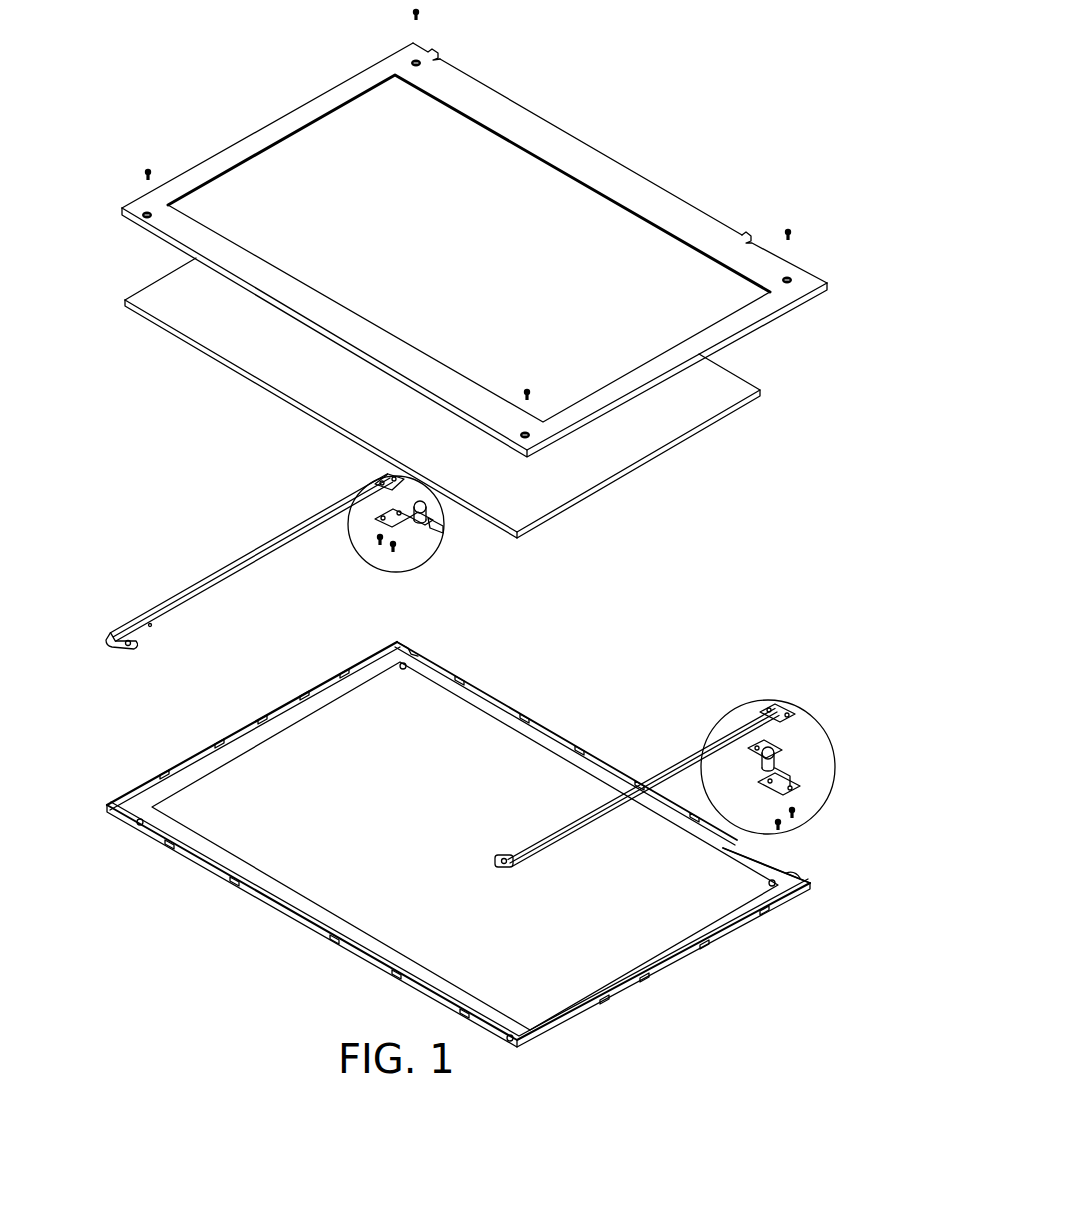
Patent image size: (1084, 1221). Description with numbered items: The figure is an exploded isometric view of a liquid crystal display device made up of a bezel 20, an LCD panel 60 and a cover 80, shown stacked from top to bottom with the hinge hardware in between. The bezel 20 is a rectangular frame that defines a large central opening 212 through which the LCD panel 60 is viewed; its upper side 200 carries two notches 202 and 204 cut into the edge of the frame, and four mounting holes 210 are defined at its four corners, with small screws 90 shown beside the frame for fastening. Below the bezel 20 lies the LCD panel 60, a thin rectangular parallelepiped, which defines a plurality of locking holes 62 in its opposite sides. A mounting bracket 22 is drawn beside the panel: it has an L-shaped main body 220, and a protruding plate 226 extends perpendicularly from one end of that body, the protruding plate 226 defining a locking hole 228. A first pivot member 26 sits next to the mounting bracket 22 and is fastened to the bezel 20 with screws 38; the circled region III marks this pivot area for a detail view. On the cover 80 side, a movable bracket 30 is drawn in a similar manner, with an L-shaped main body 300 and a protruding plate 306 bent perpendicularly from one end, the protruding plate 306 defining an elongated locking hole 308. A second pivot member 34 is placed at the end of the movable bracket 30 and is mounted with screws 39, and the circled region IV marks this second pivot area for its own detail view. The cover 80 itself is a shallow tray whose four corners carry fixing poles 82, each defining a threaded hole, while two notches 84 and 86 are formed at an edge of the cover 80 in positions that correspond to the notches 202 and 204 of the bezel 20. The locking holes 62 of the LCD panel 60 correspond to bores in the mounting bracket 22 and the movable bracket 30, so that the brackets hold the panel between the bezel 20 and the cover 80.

The bezel 20 is at (462, 233).
The top side of front frame 200 is at (552, 143).
The notch 202 is at (458, 69).
The notch 204 is at (790, 267).
The mounting hole 210 is at (143, 213).
The opening 212 is at (305, 163).
The screws 90 is at (145, 168).
The LCD panel 60 is at (466, 398).
The locking hole 62 is at (743, 405).
The mounting bracket 22 is at (251, 576).
The main body 220 is at (237, 577).
The protruding plate 226 is at (150, 655).
The locking hole 228 is at (137, 643).
The first pivot member 26 is at (403, 547).
The screw 38 is at (397, 553).
The detail view indicator III is at (363, 565).
The cover 80 is at (460, 836).
The fixing pole 82 is at (140, 820).
The notch 84 is at (447, 667).
The notch 86 is at (777, 873).
The movable bracket 30 is at (613, 787).
The main body 300 is at (567, 845).
The protruding plate 306 is at (479, 840).
The locking hole 308 is at (497, 860).
The second pivot member 34 is at (784, 758).
The screw 39 is at (783, 827).
The detail view indicator IV is at (813, 717).